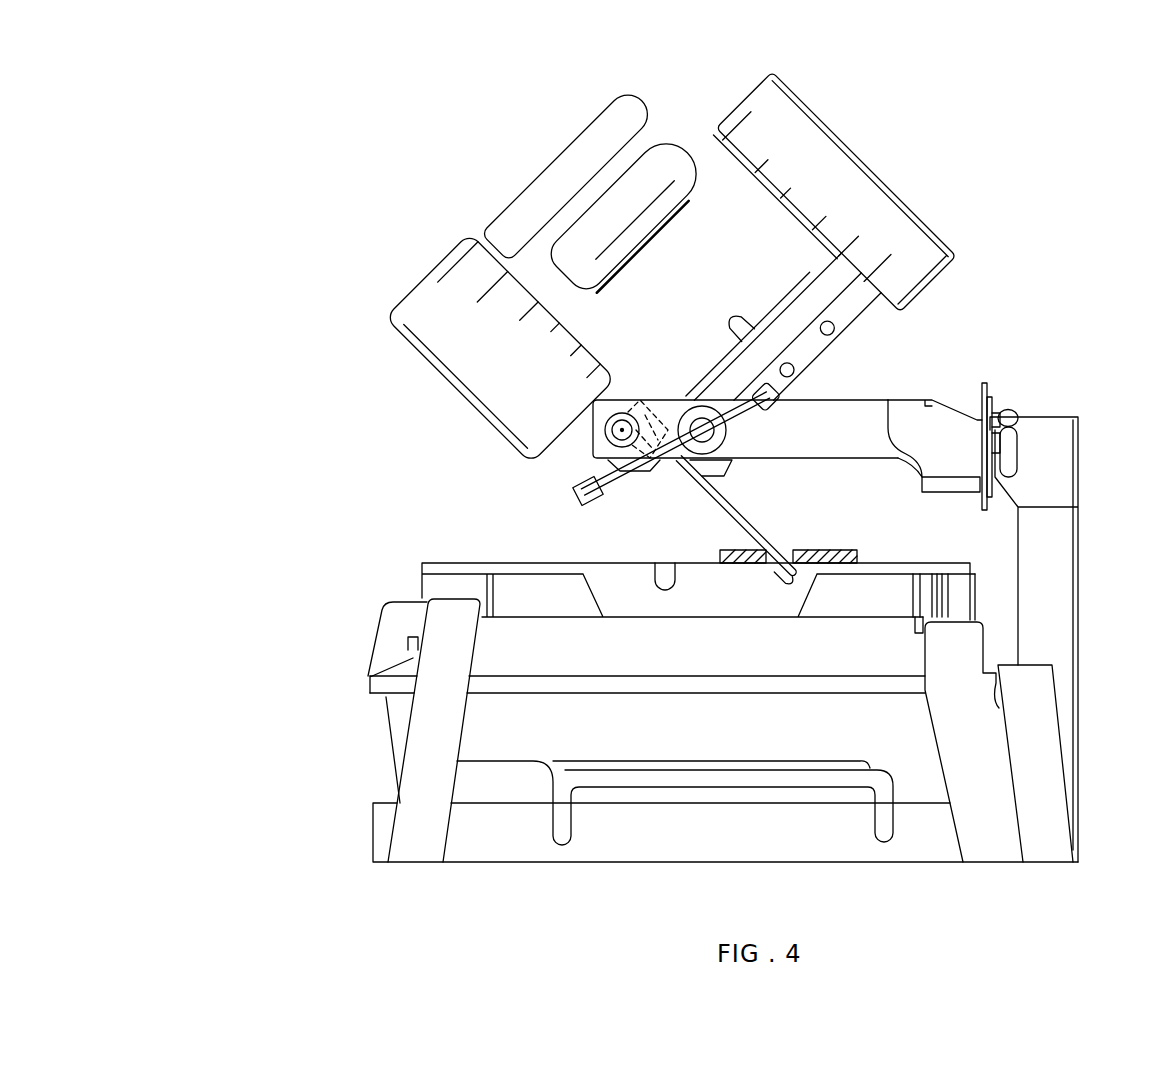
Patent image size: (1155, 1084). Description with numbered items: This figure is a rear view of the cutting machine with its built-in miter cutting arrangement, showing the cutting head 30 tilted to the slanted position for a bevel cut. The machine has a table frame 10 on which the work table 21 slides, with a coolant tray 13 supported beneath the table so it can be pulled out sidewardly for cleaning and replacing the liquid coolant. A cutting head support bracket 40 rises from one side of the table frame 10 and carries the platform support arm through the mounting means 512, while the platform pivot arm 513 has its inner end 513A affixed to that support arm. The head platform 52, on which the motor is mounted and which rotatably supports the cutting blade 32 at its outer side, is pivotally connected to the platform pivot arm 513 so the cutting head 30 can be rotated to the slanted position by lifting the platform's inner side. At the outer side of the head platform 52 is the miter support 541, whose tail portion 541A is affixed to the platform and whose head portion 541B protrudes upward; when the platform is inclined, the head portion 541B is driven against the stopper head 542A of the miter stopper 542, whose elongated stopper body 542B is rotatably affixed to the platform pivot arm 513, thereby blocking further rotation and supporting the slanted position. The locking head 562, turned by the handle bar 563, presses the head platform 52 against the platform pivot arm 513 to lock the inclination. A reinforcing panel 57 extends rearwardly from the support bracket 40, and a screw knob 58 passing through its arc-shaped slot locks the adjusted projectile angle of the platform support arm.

The table frame 10 is at (340, 741).
The coolant tray 13 is at (552, 712).
The work table 21 is at (455, 568).
The cutting head 30 is at (543, 250).
The cutting blade 32 is at (718, 494).
The cutting head support bracket 40 is at (1063, 627).
The head platform 52 is at (755, 376).
The reinforcing panel 57 is at (985, 385).
The screw knob 58 is at (1010, 417).
The mounting means 512 is at (960, 483).
The platform pivot arm 513 is at (827, 450).
The inner end of platform pivot arm 513A is at (898, 448).
The miter support 541 is at (350, 152).
The tail portion 541A is at (670, 430).
The head portion 541B is at (647, 400).
The miter stopper 542 is at (290, 372).
The stopper head 542A is at (600, 420).
The stopper body 542B is at (608, 430).
The locking head 562 is at (727, 432).
The handle bar 563 is at (607, 497).